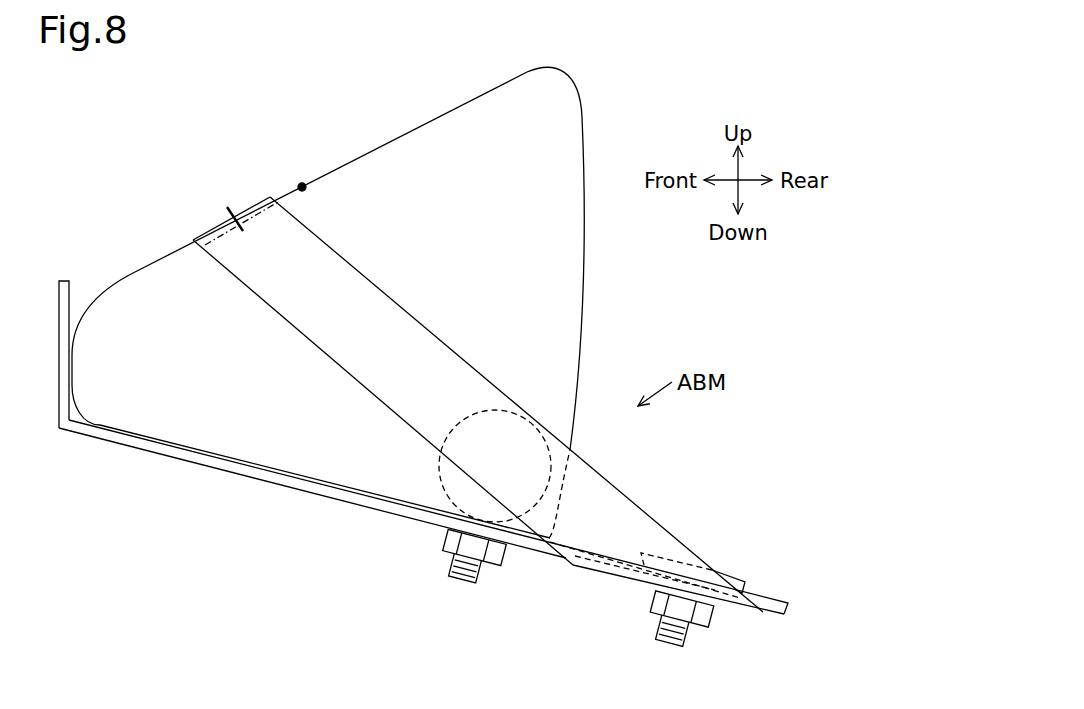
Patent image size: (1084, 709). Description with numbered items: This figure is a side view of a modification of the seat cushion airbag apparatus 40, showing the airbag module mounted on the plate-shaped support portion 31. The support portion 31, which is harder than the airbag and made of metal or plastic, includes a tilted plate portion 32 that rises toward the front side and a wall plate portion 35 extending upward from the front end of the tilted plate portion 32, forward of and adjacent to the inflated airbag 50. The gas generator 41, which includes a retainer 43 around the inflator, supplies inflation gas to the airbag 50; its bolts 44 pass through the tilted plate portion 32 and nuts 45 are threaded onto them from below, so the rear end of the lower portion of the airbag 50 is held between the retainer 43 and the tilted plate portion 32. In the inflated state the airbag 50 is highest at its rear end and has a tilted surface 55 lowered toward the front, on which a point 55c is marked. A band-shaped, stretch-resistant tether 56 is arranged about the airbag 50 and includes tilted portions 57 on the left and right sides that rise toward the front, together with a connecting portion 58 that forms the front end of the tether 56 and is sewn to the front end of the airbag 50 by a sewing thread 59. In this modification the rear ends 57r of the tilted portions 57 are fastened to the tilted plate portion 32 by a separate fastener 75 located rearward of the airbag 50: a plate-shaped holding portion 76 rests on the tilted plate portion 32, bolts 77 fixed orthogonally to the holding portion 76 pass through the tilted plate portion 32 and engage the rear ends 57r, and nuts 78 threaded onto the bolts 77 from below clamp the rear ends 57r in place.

The support portion 31 is at (117, 490).
The tilted plate portion 32 is at (95, 437).
The wall plate portion 35 is at (61, 387).
The airbag apparatus 40 is at (273, 119).
The gas generator 41 is at (438, 463).
The retainer 43 is at (488, 409).
The bolts 44 is at (478, 587).
The nuts 45 is at (493, 555).
The airbag 50 is at (584, 276).
The tilted surface 55 is at (385, 146).
The point on upper wall 55c is at (304, 182).
The tether 56 is at (464, 397).
The tilted portions 57 is at (349, 255).
The rear ends 57r is at (604, 574).
The connecting portion 58 is at (207, 232).
The sewing thread 59 is at (228, 208).
The fastener 75 is at (734, 549).
The holding portion 76 is at (745, 575).
The bolts 77 is at (690, 645).
The nuts 78 is at (713, 618).